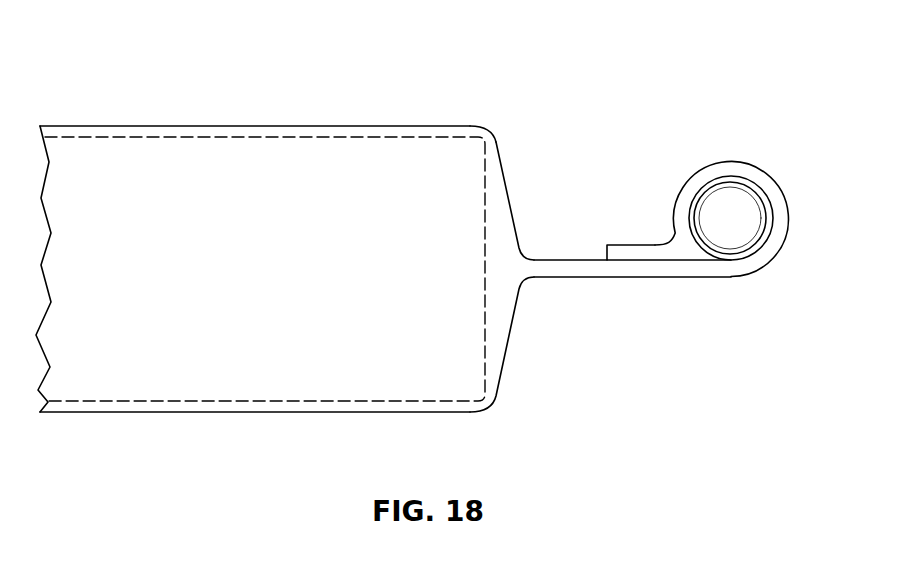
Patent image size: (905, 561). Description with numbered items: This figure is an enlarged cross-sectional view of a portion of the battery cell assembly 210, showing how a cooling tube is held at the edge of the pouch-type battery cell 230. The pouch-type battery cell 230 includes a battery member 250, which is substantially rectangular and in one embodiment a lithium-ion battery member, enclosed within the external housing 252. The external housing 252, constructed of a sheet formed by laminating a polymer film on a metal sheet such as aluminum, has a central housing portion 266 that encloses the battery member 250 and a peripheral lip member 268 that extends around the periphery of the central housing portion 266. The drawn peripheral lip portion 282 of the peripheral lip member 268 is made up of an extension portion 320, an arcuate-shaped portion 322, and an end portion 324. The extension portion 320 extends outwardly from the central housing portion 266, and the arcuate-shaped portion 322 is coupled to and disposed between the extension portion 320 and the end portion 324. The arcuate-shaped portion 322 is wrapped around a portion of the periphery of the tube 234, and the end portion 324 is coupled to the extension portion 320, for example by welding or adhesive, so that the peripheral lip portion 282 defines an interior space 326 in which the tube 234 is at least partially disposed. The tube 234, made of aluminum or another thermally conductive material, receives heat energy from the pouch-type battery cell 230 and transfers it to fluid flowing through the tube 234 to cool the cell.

The battery cell assembly 210 is at (280, 100).
The pouch-type battery cell 230 is at (348, 124).
The tube 234 is at (722, 193).
The battery member 250 is at (208, 137).
The external housing 252 is at (155, 126).
The central housing portion 266 is at (500, 158).
The peripheral lip member 268 is at (549, 278).
The peripheral lip portion 282 is at (573, 260).
The extension portion 320 is at (612, 278).
The arcuate-shaped portion 322 is at (765, 170).
The end portion 324 is at (630, 245).
The interior space 326 is at (695, 200).